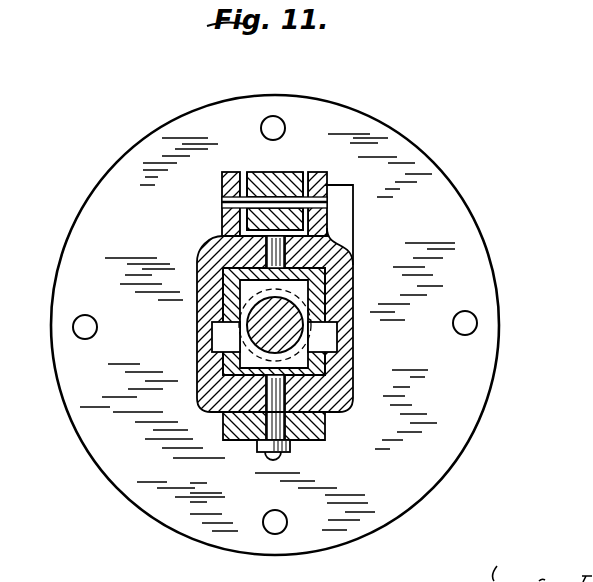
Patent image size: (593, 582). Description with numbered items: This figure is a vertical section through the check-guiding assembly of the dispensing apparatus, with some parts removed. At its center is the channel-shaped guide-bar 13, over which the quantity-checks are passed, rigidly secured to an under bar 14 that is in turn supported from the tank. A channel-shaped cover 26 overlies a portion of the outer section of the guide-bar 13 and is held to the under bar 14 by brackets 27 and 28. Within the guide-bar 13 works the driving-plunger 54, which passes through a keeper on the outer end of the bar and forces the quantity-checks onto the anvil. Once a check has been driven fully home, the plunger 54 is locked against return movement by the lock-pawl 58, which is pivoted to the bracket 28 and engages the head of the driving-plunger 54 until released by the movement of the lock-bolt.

The bracket 27 is at (108, 205).
The bracket 28 is at (215, 242).
The channel-shaped cover 26 is at (352, 257).
The lock-pawl 58 is at (283, 182).
The channel-shaped guide-bar 13 is at (318, 344).
The driving-plunger 54 is at (250, 324).
The under bar 14 is at (322, 434).